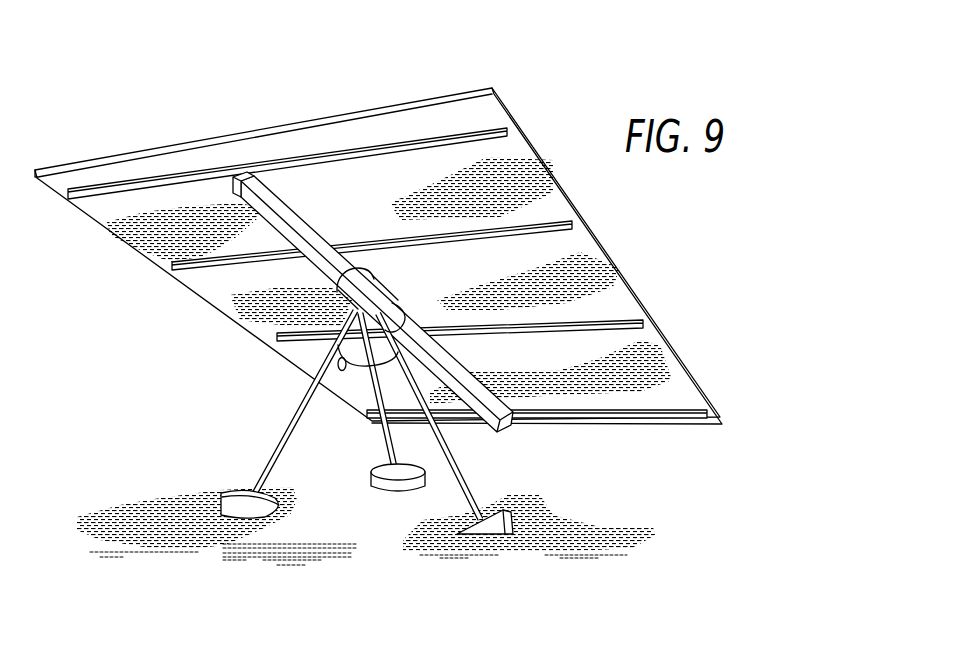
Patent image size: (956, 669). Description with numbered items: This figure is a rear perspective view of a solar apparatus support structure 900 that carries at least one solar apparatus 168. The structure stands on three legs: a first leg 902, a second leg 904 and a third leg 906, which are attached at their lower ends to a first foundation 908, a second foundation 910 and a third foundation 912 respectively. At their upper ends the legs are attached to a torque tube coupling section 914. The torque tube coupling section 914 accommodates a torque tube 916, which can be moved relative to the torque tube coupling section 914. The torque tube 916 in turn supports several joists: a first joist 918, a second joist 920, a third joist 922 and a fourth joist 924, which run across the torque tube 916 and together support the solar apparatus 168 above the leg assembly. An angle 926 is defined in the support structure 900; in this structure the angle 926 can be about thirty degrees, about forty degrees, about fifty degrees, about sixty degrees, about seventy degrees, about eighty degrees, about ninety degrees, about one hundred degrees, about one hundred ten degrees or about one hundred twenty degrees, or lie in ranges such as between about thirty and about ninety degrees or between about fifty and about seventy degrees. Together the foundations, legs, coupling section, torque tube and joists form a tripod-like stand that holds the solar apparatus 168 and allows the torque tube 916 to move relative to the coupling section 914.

The solar apparatus support structure 900 is at (548, 70).
The solar apparatus 168 is at (590, 262).
The torque tube coupling section 914 is at (348, 291).
The torque tube 916 is at (243, 197).
The first joist 918 is at (507, 132).
The second joist 920 is at (572, 223).
The third joist 922 is at (643, 318).
The fourth joist 924 is at (715, 413).
The first leg 902 is at (312, 390).
The second leg 904 is at (467, 481).
The third leg 906 is at (383, 450).
The first foundation 908 is at (238, 495).
The second foundation 910 is at (494, 523).
The third foundation 912 is at (372, 480).
The angle 926 is at (357, 363).